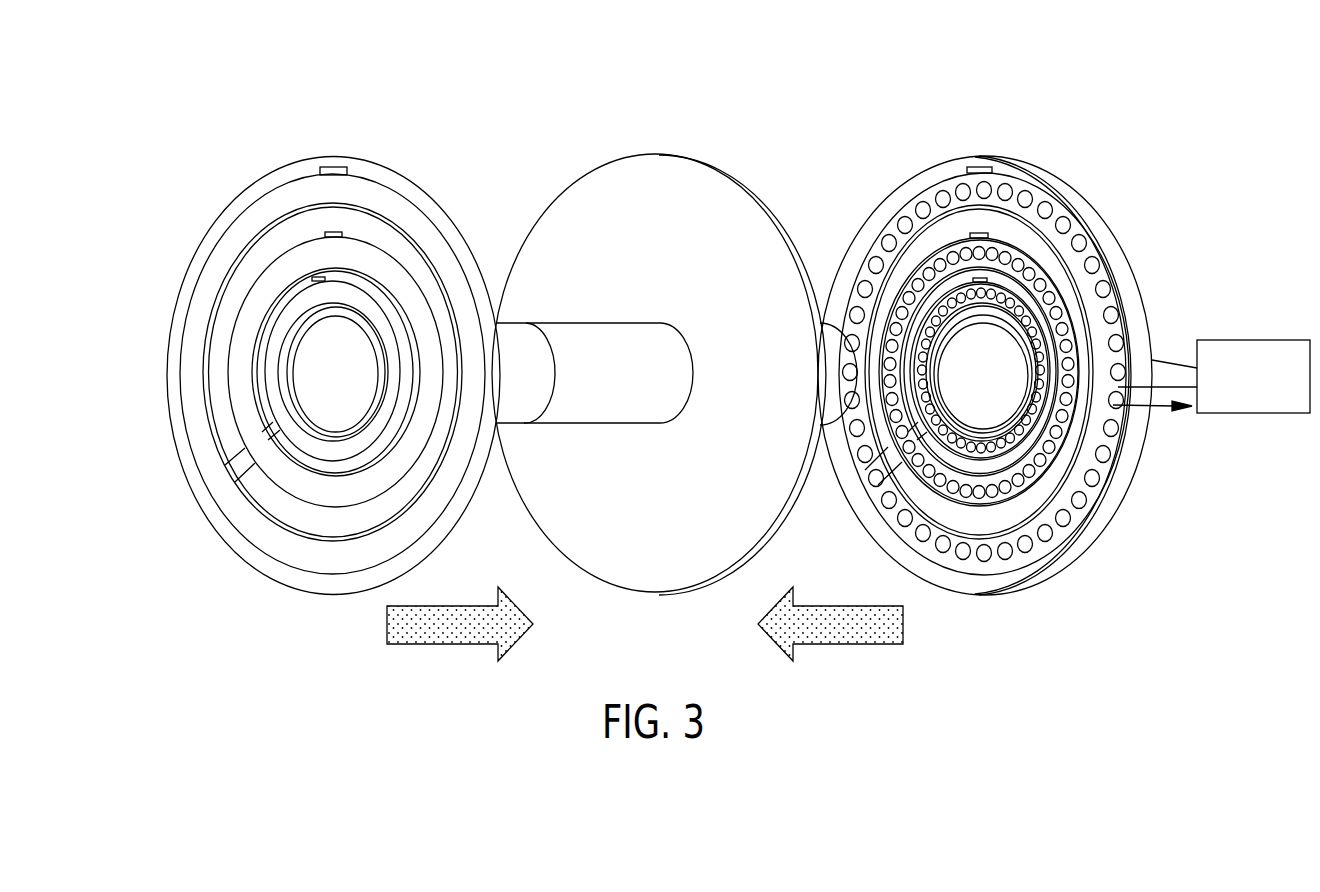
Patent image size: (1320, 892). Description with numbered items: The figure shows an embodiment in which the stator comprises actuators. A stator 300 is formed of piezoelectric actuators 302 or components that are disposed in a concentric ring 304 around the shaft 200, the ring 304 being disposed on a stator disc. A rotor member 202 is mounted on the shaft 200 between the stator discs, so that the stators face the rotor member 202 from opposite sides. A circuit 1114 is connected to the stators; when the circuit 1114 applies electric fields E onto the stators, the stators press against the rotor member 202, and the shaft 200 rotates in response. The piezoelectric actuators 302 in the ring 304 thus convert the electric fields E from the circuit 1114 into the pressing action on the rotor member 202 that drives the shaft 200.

The stator 300 is at (174, 131).
The concentric ring 304 is at (375, 197).
The rotor member 202 is at (664, 180).
The shaft 200 is at (598, 340).
The piezoelectric actuators 302 is at (1116, 330).
The circuit 1114 is at (1248, 340).
The electric fields E is at (1158, 412).